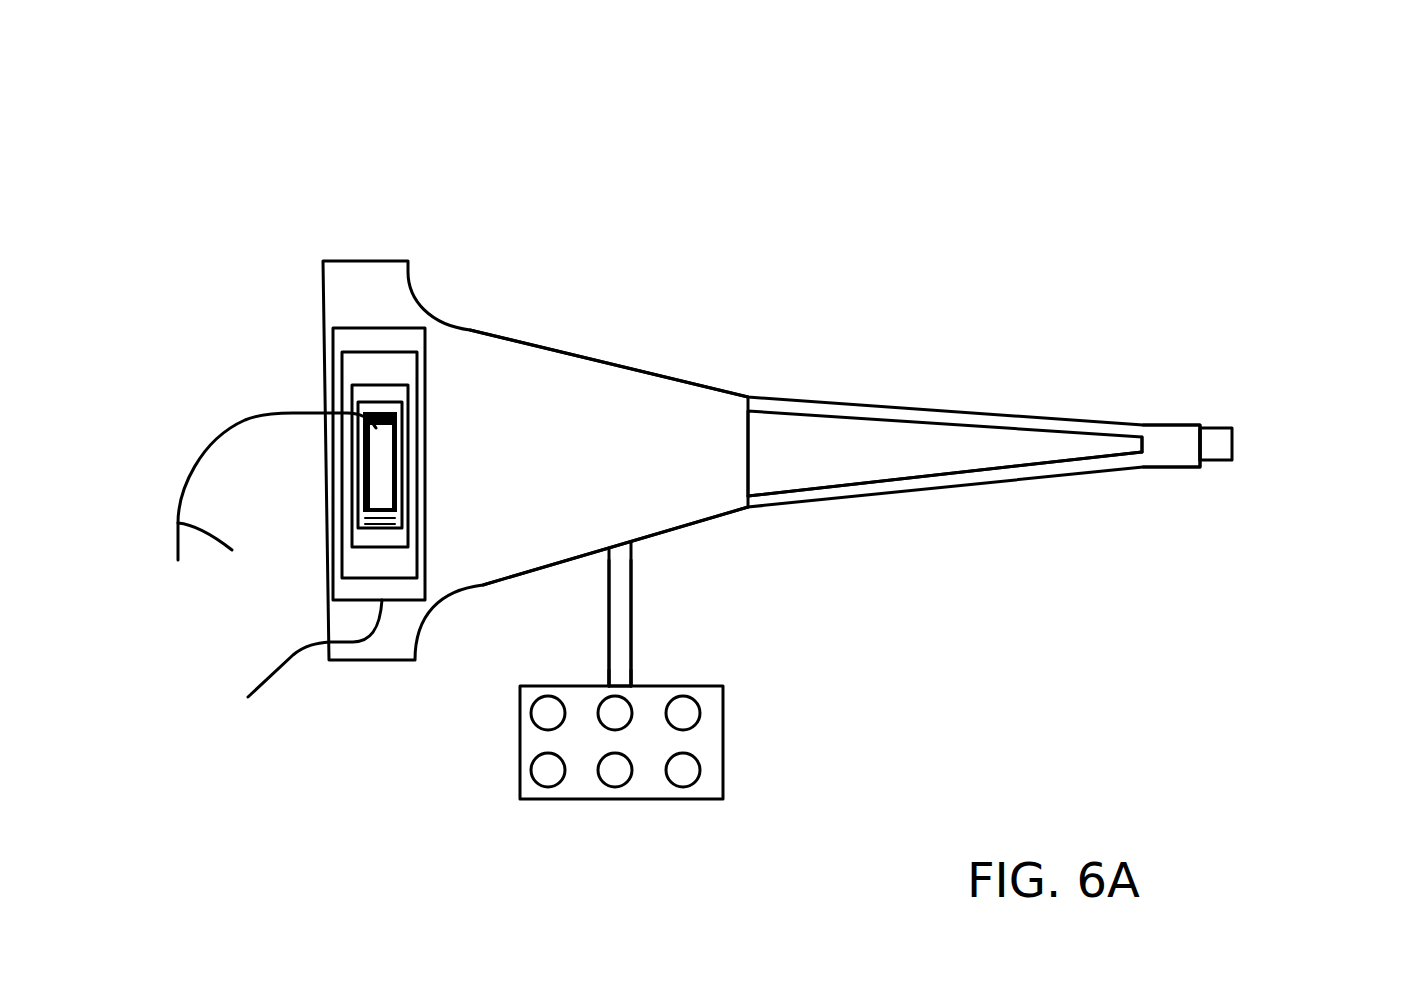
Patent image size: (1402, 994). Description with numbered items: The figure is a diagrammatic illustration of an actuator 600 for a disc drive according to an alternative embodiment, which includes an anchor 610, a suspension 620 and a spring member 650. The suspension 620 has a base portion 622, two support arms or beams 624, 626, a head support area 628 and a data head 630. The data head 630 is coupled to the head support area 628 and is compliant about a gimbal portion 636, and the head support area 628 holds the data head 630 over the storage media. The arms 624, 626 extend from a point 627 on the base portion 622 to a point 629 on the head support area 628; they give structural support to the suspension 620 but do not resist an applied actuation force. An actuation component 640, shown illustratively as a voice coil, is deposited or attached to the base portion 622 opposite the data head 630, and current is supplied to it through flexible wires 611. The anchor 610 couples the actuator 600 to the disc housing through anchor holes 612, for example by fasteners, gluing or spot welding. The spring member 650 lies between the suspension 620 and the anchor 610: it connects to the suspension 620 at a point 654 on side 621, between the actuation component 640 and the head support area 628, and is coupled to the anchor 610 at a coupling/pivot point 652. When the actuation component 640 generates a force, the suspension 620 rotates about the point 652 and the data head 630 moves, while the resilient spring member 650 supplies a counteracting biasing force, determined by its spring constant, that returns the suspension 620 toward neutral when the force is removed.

The actuator 600 is at (963, 118).
The anchor 610 is at (652, 785).
The flexible wires 611 is at (292, 652).
The anchor holes 612 is at (617, 768).
The suspension 620 is at (761, 400).
The side of suspension 621 is at (693, 533).
The base portion 622 is at (580, 378).
The support arm 624 is at (902, 405).
The support arm 626 is at (900, 492).
The point on base portion 627 is at (750, 397).
The head support area 628 is at (1207, 427).
The point on head support area 629 is at (1147, 430).
The data head 630 is at (1233, 445).
The gimbal portion 636 is at (1203, 445).
The actuation component 640 is at (348, 405).
The spring member 650 is at (609, 605).
The coupling/pivot point 652 is at (625, 682).
The connection point 654 is at (618, 542).